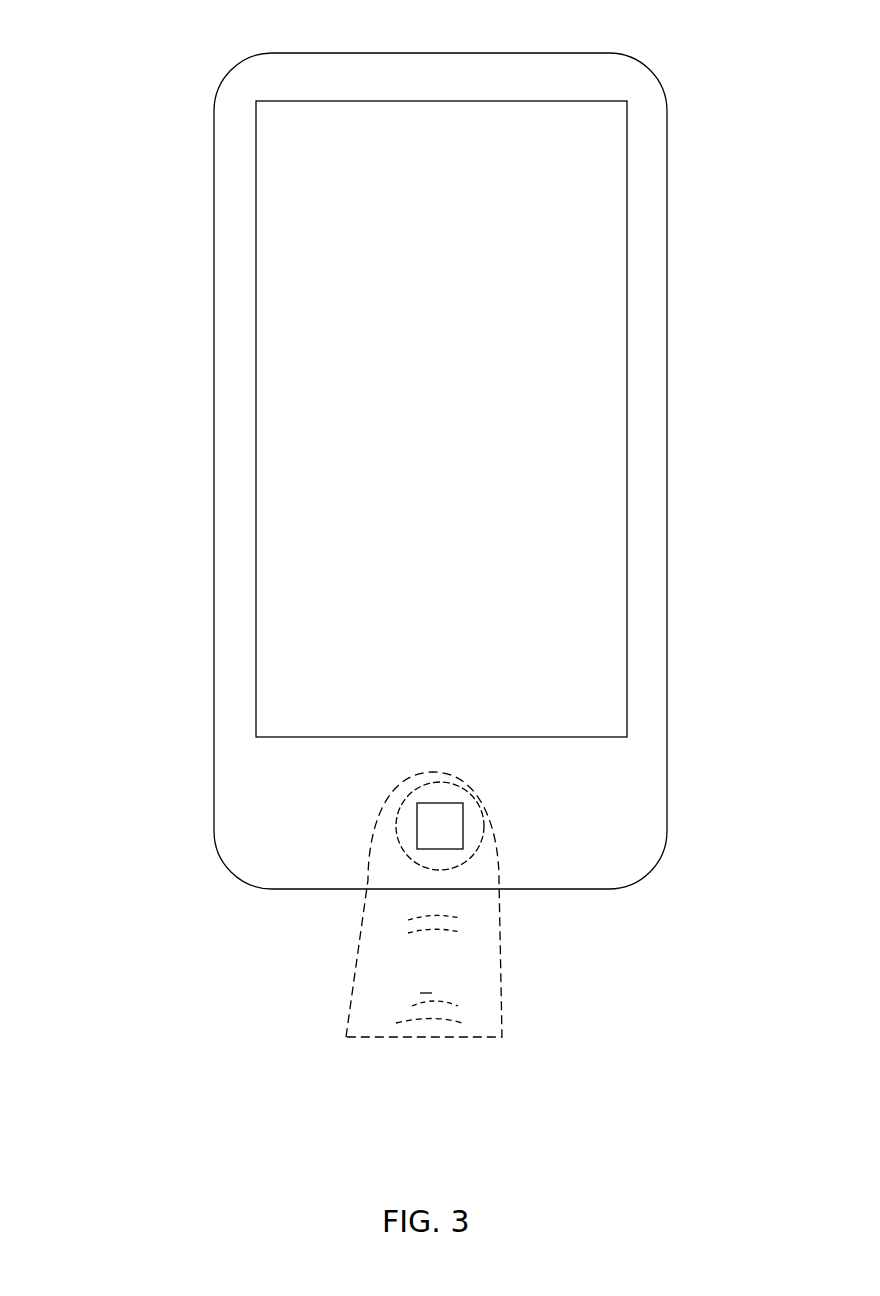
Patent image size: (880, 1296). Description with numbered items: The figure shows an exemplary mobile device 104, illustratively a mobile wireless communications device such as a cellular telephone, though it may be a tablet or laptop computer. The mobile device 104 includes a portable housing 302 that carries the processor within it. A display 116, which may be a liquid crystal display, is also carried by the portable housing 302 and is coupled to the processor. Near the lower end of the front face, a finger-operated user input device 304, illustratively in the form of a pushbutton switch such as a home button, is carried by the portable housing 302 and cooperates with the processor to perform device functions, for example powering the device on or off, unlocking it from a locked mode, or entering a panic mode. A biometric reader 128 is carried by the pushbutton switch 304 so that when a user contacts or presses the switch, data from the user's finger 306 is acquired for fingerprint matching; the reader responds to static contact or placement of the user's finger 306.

The mobile device 104 is at (196, 47).
The portable housing 302 is at (214, 226).
The display 116 is at (255, 325).
The finger-operated user input device 304 is at (484, 805).
The biometric reader 128 is at (455, 850).
The user's finger 306 is at (369, 897).